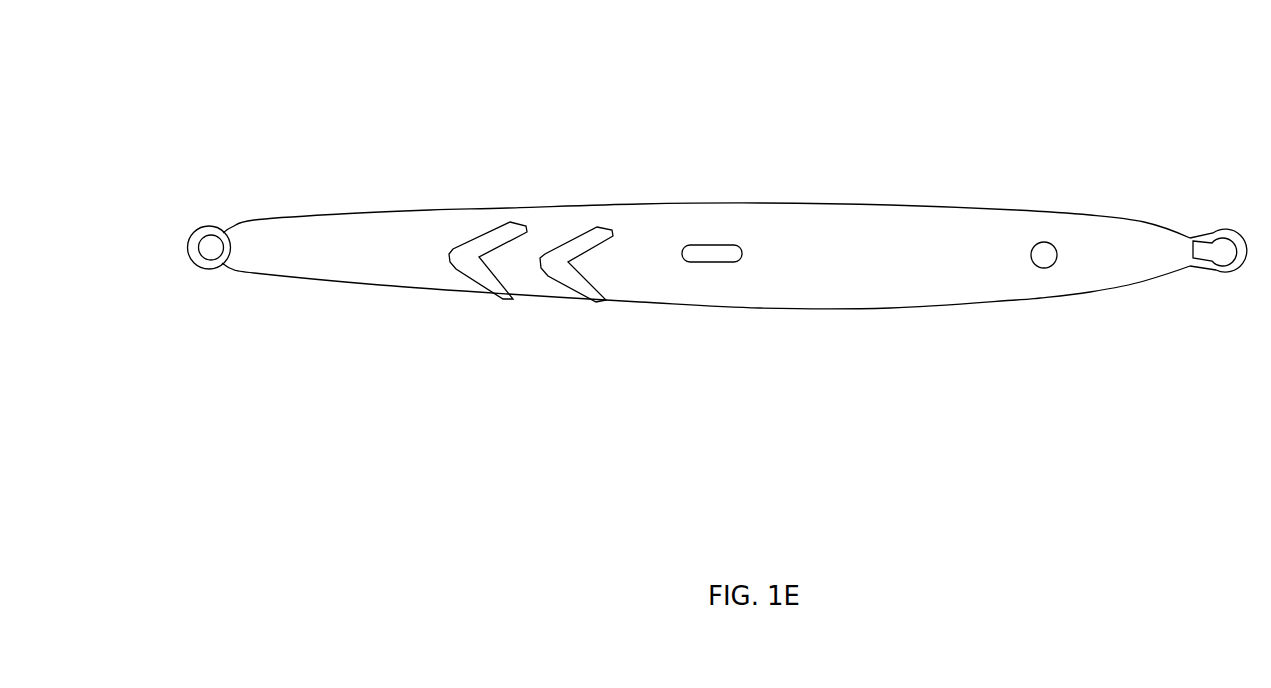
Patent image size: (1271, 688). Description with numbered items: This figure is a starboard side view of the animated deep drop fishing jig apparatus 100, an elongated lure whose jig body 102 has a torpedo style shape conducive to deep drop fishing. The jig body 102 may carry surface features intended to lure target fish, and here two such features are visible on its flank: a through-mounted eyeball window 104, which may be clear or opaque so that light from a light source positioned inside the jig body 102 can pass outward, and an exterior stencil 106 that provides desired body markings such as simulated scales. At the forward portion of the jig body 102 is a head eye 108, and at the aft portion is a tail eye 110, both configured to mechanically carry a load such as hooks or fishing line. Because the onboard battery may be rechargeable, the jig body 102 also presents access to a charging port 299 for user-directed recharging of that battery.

The animated deep drop fishing jig apparatus and system 100 is at (297, 68).
The jig body 102 is at (870, 203).
The through-mounted eyeball window 104 is at (1044, 243).
The exterior stencil 106 is at (506, 298).
The head eye 108 is at (1230, 271).
The tail eye 110 is at (213, 269).
The charging port 299 is at (713, 263).